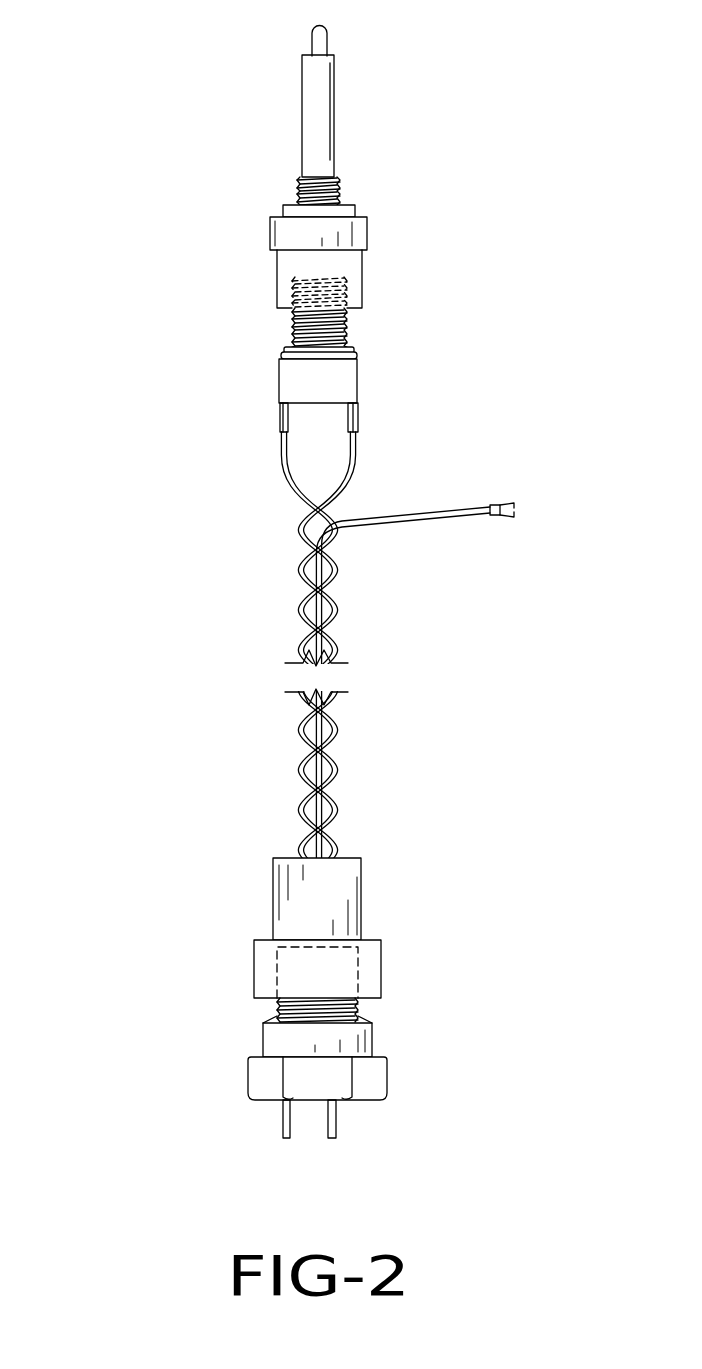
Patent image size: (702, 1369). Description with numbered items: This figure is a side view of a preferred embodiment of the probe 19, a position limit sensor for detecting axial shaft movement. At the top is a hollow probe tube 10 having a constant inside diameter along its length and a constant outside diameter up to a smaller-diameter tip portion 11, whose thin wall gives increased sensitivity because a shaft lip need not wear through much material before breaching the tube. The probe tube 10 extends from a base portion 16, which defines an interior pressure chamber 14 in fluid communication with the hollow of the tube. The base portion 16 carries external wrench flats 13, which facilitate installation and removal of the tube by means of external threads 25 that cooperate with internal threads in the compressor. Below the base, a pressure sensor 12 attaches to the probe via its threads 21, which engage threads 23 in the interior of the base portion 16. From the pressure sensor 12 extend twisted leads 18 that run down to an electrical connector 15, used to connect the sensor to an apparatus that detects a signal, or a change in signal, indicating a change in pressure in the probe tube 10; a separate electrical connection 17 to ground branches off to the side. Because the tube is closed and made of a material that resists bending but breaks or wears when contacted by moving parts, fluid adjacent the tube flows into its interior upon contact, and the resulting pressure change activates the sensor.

The probe tube 10 is at (328, 103).
The tip portion 11 is at (320, 32).
The pressure sensor 12 is at (322, 383).
The wrench flats 13 is at (334, 232).
The interior pressure chamber 14 is at (342, 300).
The electrical connector 15 is at (330, 1125).
The base portion 16 is at (349, 275).
The electrical connection to ground 17 is at (503, 505).
The leads 18 is at (333, 767).
The probe 19 is at (152, 168).
The threads 21 is at (280, 298).
The threads 23 is at (316, 320).
The external threads 25 is at (334, 184).